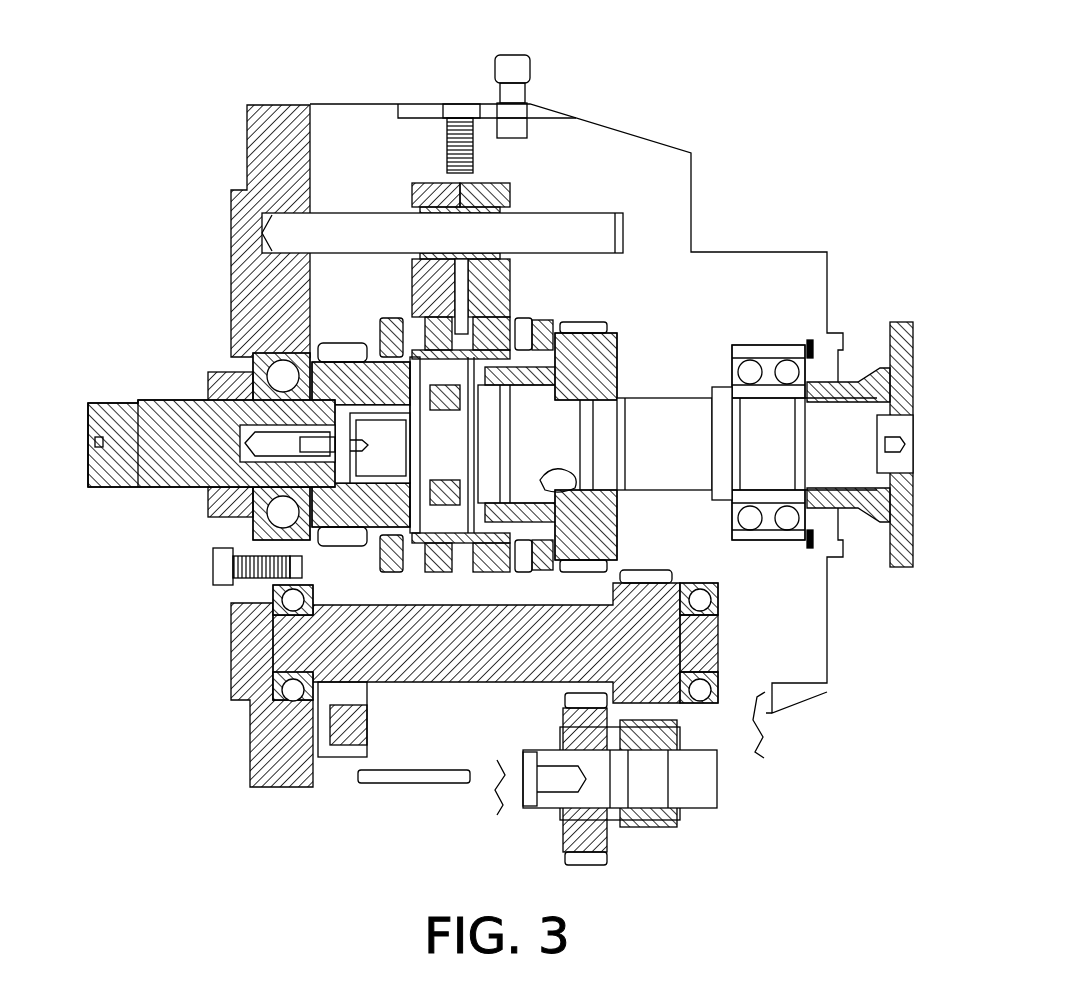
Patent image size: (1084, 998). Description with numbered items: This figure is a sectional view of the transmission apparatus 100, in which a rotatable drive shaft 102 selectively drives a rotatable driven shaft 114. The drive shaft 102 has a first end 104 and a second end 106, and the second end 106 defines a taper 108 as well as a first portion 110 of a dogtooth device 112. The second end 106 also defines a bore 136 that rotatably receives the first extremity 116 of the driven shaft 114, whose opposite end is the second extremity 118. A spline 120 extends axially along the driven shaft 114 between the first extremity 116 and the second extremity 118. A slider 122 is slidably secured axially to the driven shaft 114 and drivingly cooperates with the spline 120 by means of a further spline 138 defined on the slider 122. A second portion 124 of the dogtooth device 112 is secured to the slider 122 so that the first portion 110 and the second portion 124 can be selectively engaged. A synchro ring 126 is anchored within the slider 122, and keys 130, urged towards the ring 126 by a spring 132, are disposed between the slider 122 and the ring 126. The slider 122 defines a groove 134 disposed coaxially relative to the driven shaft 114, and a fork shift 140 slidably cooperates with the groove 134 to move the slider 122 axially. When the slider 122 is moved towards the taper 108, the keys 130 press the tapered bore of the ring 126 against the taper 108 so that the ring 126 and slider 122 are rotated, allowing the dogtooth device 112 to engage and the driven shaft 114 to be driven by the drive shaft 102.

The transmission apparatus 100 is at (733, 108).
The drive shaft 102 is at (160, 473).
The first end 104 is at (110, 412).
The second end 106 is at (352, 385).
The taper 108 is at (585, 390).
The first portion 110 is at (400, 318).
The dogtooth device 112 is at (340, 613).
The driven shaft 114 is at (665, 417).
The first extremity 116 is at (262, 398).
The second extremity 118 is at (840, 432).
The spline 120 is at (527, 520).
The slider 122 is at (513, 325).
The second portion 124 is at (445, 315).
The synchro ring 126 is at (418, 560).
The keys 130 is at (457, 560).
The spring 132 is at (497, 320).
The groove 134 is at (487, 560).
The bore 136 is at (300, 447).
The further spline 138 is at (520, 450).
The fork shift 140 is at (478, 183).